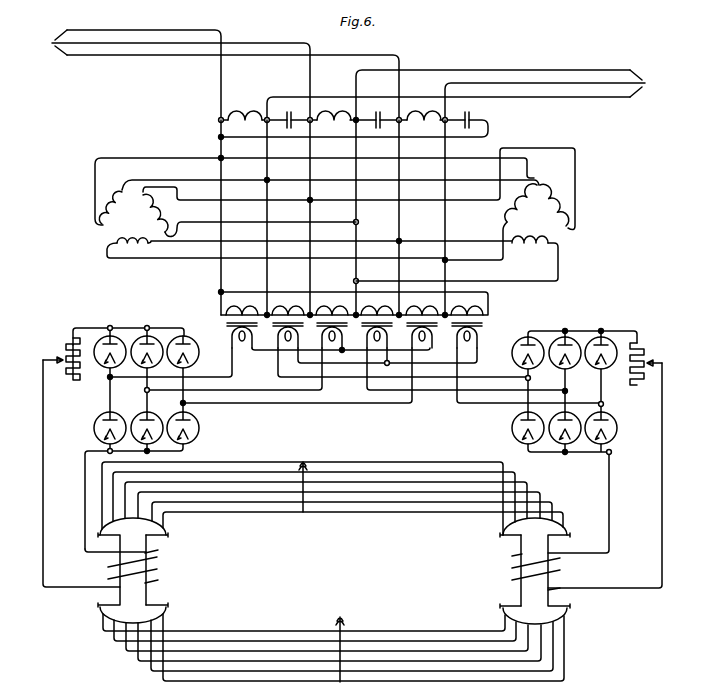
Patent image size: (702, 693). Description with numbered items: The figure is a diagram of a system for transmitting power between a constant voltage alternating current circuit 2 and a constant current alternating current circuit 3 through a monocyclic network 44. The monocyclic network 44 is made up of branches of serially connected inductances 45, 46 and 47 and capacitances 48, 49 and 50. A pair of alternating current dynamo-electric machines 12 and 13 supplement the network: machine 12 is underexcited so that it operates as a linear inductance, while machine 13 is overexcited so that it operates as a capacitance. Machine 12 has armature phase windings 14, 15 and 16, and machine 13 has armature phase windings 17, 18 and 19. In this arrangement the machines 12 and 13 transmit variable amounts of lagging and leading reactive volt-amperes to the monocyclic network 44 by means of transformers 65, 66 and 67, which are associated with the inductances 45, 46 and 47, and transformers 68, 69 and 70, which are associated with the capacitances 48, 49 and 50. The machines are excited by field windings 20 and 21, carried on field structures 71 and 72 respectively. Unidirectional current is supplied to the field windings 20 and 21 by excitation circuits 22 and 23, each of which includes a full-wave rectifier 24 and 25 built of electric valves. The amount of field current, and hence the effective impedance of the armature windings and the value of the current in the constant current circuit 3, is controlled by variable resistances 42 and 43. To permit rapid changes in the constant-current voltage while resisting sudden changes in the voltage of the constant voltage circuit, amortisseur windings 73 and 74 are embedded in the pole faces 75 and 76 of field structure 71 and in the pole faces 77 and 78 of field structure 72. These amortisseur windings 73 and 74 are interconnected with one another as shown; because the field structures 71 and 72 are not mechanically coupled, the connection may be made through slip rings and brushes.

The constant voltage alternating current circuit 2 is at (217, 75).
The constant current alternating current circuit 3 is at (463, 95).
The dynamo-electric machine 12 is at (303, 220).
The dynamo-electric machine 13 is at (398, 214).
The armature phase winding 14 is at (162, 214).
The armature phase winding 15 is at (133, 240).
The armature phase winding 16 is at (116, 190).
The armature phase winding 17 is at (549, 192).
The armature phase winding 18 is at (532, 239).
The armature phase winding 19 is at (504, 218).
The field winding 20 is at (147, 571).
The field winding 21 is at (530, 572).
The excitation circuit 22 is at (132, 480).
The excitation circuit 23 is at (577, 482).
The rectifier 24 is at (136, 369).
The rectifier 25 is at (574, 370).
The variable resistance 42 is at (66, 351).
The variable resistance 43 is at (644, 360).
The monocyclic network 44 is at (353, 111).
The inductance 45 is at (241, 112).
The inductance 46 is at (333, 128).
The inductance 47 is at (422, 128).
The capacitance 48 is at (289, 130).
The capacitance 49 is at (378, 130).
The capacitance 50 is at (467, 130).
The transformer 65 is at (343, 320).
The transformer 66 is at (309, 325).
The transformer 67 is at (397, 325).
The transformer 68 is at (263, 325).
The transformer 69 is at (353, 325).
The transformer 70 is at (442, 325).
The field structure 71 is at (148, 548).
The field structure 72 is at (520, 552).
The amortisseur winding 73 is at (300, 508).
The amortisseur winding 74 is at (340, 618).
The pole face 75 is at (166, 530).
The pole face 76 is at (163, 613).
The pole face 77 is at (505, 530).
The pole face 78 is at (505, 614).